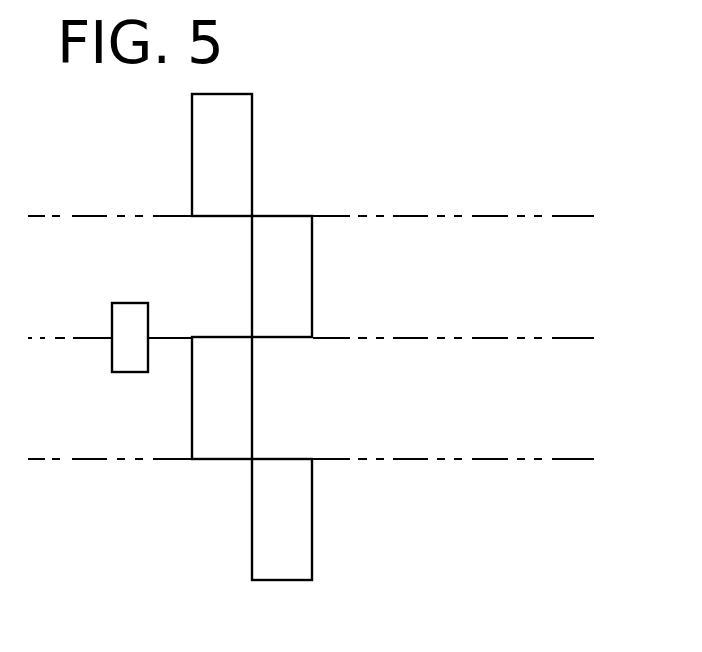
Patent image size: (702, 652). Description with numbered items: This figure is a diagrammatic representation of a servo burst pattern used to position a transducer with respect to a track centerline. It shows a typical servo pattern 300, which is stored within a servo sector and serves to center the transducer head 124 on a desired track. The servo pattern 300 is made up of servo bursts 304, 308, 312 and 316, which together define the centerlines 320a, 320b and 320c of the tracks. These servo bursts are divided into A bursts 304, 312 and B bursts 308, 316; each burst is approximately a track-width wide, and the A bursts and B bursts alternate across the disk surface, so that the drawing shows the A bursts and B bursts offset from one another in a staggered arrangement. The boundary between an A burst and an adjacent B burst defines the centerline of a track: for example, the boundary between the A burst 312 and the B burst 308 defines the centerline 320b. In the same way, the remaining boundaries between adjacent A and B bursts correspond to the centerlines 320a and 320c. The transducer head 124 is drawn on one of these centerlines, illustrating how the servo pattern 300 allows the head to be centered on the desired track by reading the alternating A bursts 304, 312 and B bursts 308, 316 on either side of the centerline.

The servo pattern 300 is at (310, 90).
The A burst 304 is at (192, 161).
The B burst 308 is at (312, 296).
The A burst 312 is at (192, 424).
The B burst 316 is at (312, 540).
The transducer head 124 is at (112, 322).
The centerline 320a is at (520, 216).
The centerline 320b is at (520, 338).
The centerline 320c is at (520, 459).